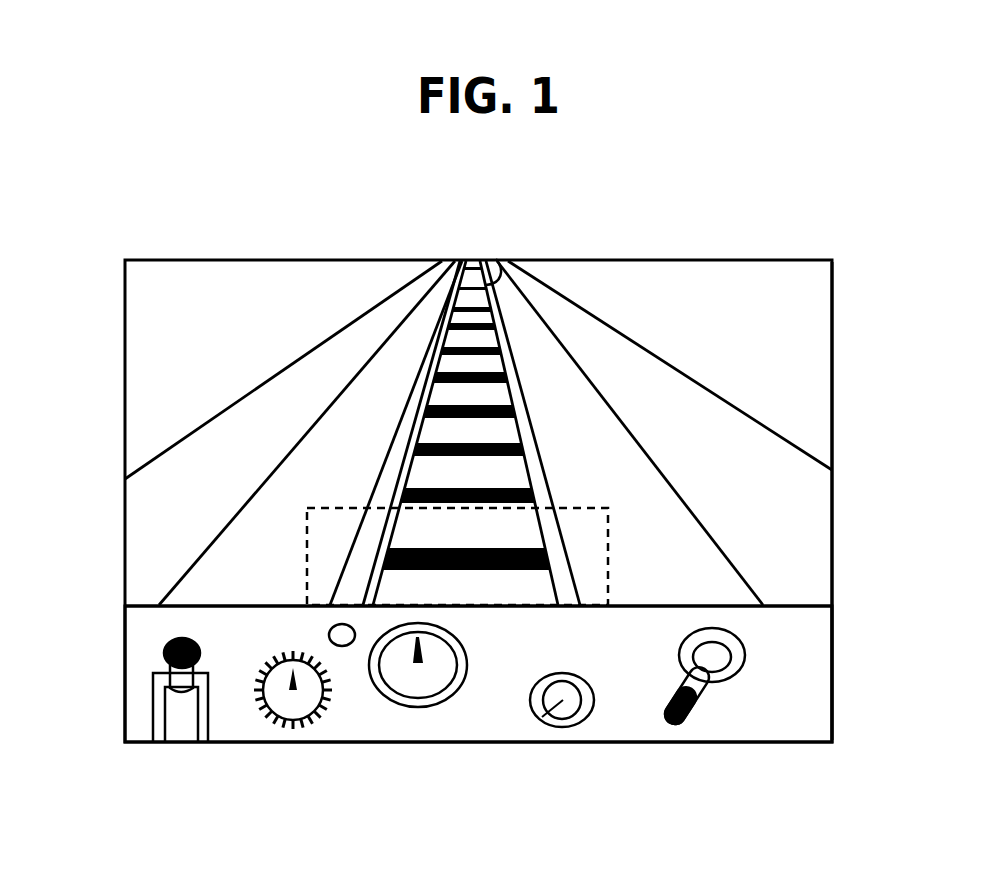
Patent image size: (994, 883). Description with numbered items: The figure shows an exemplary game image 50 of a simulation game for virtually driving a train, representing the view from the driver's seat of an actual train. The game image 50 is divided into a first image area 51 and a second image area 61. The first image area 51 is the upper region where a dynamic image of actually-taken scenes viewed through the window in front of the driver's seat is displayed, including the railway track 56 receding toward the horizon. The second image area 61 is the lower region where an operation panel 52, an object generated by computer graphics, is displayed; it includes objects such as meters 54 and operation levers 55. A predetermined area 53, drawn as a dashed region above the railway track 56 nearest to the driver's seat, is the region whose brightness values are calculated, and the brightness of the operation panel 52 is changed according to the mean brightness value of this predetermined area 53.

The game image 50 is at (603, 258).
The first image area 51 is at (659, 281).
The operation panel 52 is at (807, 728).
The predetermined area 53 is at (560, 508).
The meters 54 is at (410, 698).
The operation levers 55 is at (164, 656).
The railway track 56 is at (497, 260).
The second image area 61 is at (833, 657).